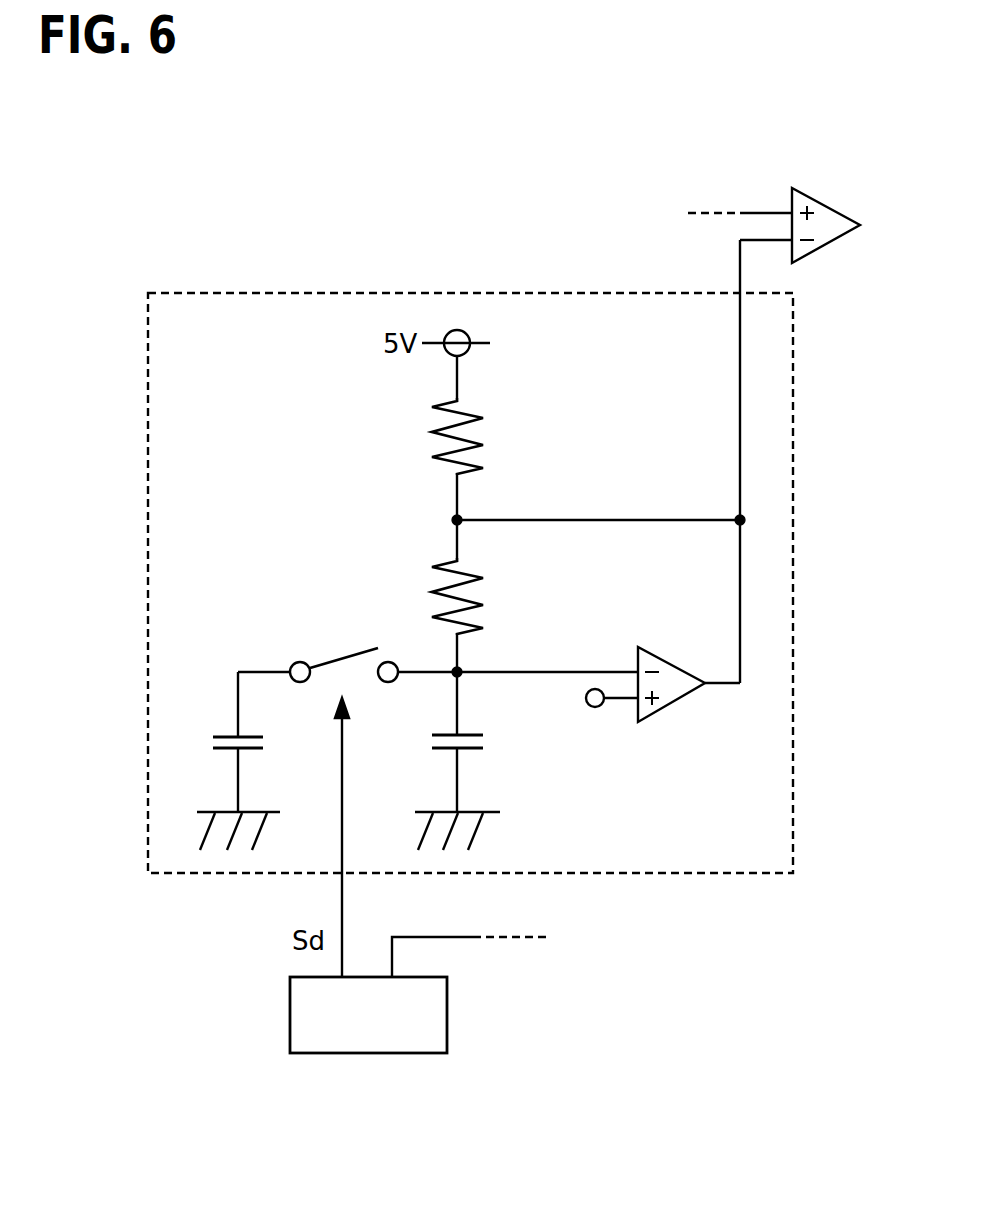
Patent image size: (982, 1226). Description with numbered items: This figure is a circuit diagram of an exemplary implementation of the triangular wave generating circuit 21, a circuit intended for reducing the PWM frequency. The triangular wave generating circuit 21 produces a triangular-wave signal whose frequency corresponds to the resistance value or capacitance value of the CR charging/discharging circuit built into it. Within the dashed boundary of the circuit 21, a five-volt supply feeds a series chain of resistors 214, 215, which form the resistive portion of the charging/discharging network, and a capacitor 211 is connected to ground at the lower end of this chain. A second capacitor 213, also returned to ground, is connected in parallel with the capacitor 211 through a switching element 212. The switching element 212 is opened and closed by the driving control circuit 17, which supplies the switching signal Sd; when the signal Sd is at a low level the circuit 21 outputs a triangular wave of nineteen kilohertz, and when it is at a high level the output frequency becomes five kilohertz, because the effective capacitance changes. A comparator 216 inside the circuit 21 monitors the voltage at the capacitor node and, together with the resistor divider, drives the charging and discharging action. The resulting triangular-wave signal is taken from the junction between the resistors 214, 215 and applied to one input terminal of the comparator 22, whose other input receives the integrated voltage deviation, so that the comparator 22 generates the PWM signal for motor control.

The triangular wave generating circuit 21 is at (148, 460).
The comparator 22 is at (826, 205).
The resistor 214 is at (485, 430).
The resistor 215 is at (485, 596).
The comparator 216 is at (672, 660).
The switching element 212 is at (322, 652).
The capacitor 213 is at (210, 740).
The capacitor 211 is at (490, 740).
The driving control circuit 17 is at (290, 1017).